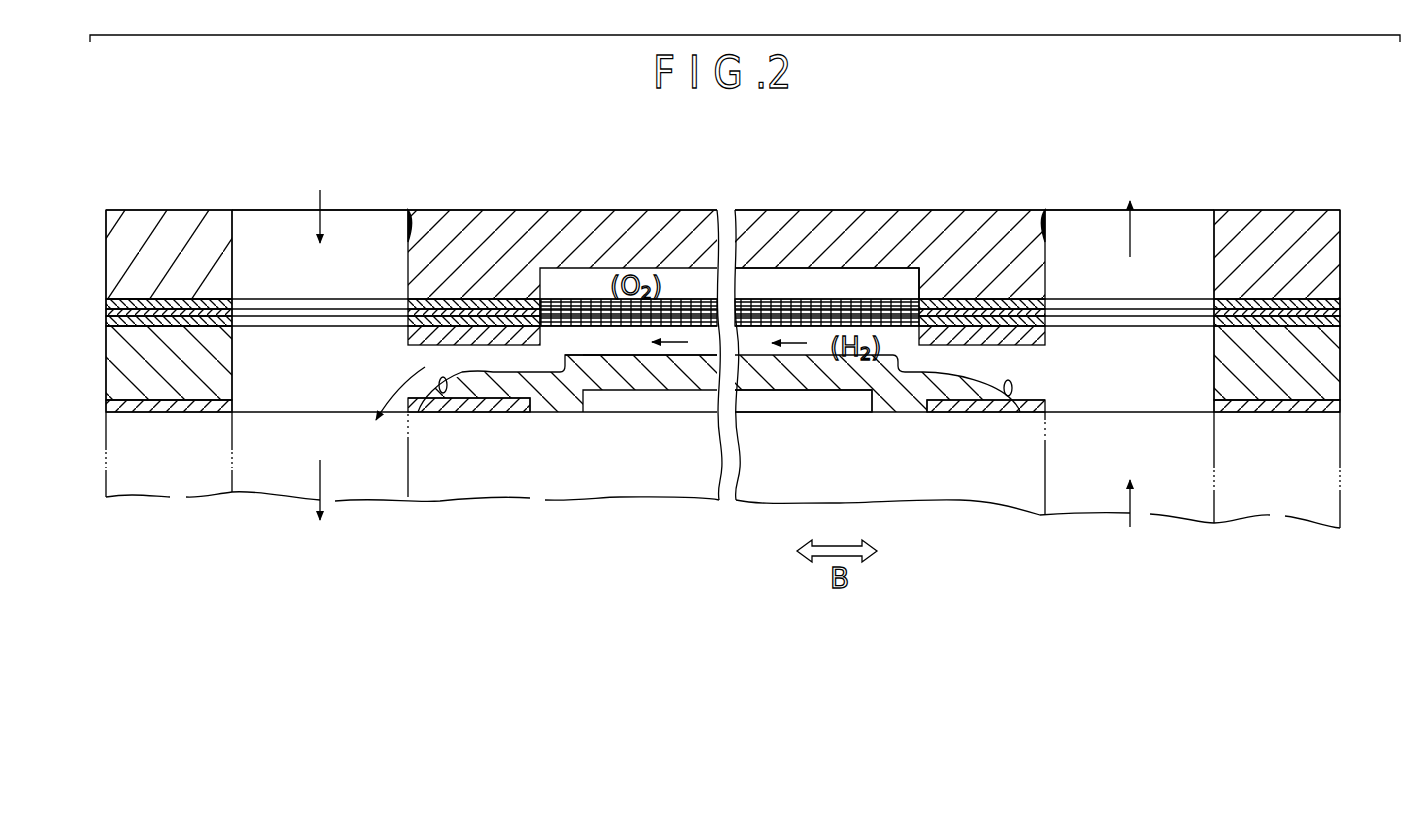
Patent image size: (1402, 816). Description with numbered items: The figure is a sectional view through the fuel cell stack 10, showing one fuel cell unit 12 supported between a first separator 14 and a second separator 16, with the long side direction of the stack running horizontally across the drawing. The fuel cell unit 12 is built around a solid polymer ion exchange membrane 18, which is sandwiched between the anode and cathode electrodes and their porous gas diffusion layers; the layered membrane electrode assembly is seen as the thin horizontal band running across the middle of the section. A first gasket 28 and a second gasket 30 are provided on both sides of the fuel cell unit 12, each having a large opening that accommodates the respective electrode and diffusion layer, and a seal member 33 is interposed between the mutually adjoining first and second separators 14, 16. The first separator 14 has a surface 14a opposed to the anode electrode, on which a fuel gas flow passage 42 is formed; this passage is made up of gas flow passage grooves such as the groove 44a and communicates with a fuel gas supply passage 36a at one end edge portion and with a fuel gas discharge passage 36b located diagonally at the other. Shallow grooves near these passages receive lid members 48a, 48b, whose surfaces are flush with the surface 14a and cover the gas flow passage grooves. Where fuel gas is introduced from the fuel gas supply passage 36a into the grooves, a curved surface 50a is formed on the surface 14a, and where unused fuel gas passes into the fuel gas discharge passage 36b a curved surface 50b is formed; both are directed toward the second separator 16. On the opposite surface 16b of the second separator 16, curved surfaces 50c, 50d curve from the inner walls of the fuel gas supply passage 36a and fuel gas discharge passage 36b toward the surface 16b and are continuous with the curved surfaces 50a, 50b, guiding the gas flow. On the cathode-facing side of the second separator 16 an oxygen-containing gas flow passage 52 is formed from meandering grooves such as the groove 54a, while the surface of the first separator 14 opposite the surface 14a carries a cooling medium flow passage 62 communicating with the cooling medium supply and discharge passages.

The fuel cell stack 10 is at (1225, 108).
The fuel cell unit 12 is at (1400, 323).
The first separator 14 is at (556, 419).
The surface of the first separator 14a is at (693, 352).
The second separator 16 is at (854, 204).
The surface of the second separator 16b is at (973, 213).
The solid polymer ion exchange membrane 18 is at (233, 328).
The first gasket 28 is at (1307, 327).
The second gasket 30 is at (1303, 300).
The seal member 33 is at (1258, 411).
The fuel gas supply passage 36a is at (1193, 233).
The fuel gas discharge passage 36b is at (363, 218).
The fuel gas flow passage 42 is at (597, 360).
The gas flow passage groove 44a is at (913, 360).
The lid member 48a is at (1046, 340).
The lid member 48b is at (408, 340).
The curved surface 50a is at (999, 411).
The curved surface 50b is at (447, 387).
The curved surface 50c is at (1042, 213).
The curved surface 50d is at (412, 207).
The oxygen-containing gas flow passage 52 is at (768, 280).
The gas flow passage groove 54a is at (583, 283).
The cooling medium flow passage 62 is at (771, 414).